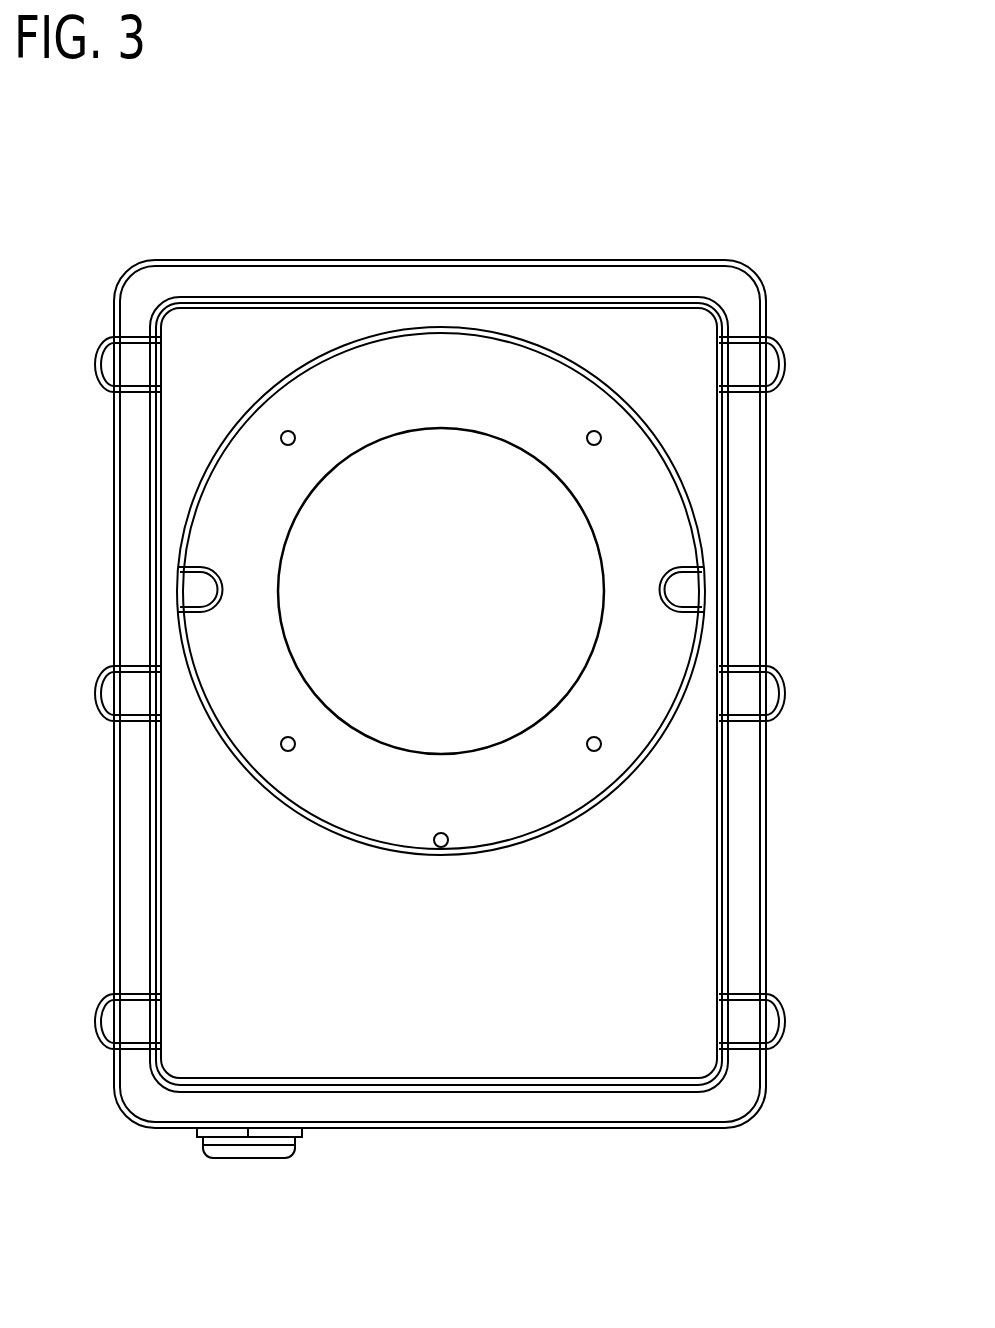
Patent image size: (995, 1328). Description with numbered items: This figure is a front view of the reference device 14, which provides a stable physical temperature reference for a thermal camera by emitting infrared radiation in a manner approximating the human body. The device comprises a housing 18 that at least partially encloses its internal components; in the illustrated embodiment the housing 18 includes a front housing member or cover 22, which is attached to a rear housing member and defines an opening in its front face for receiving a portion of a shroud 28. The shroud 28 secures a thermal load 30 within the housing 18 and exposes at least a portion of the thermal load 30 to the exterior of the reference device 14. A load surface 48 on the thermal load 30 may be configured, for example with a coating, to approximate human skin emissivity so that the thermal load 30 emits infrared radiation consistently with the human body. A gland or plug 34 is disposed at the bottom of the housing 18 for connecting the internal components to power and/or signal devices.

The reference device 14 is at (783, 169).
The housing 18 is at (784, 980).
The cover 22 is at (542, 1035).
The shroud 28 is at (370, 375).
The thermal load 30 is at (288, 528).
The gland or plug 34 is at (249, 1152).
The load surface 48 is at (563, 528).